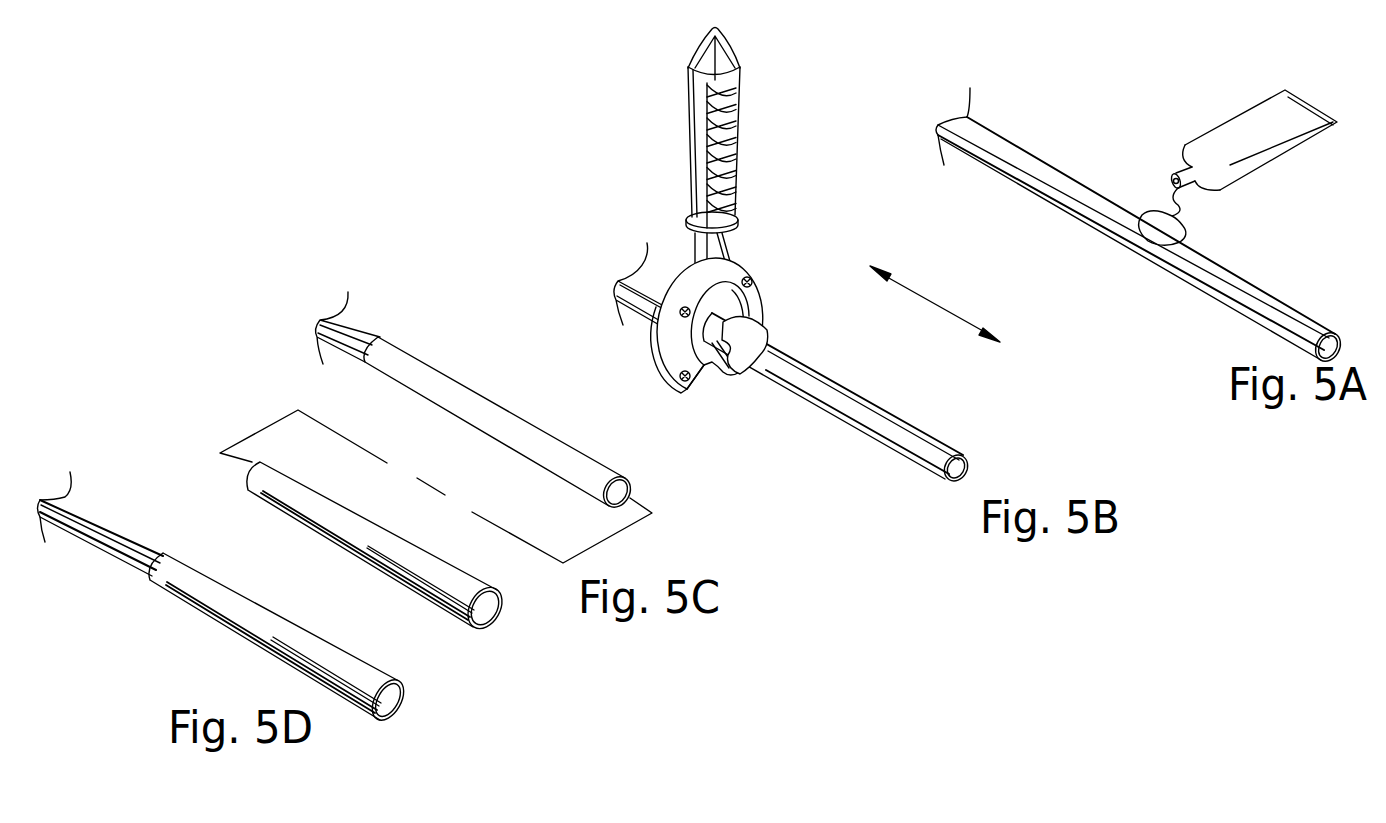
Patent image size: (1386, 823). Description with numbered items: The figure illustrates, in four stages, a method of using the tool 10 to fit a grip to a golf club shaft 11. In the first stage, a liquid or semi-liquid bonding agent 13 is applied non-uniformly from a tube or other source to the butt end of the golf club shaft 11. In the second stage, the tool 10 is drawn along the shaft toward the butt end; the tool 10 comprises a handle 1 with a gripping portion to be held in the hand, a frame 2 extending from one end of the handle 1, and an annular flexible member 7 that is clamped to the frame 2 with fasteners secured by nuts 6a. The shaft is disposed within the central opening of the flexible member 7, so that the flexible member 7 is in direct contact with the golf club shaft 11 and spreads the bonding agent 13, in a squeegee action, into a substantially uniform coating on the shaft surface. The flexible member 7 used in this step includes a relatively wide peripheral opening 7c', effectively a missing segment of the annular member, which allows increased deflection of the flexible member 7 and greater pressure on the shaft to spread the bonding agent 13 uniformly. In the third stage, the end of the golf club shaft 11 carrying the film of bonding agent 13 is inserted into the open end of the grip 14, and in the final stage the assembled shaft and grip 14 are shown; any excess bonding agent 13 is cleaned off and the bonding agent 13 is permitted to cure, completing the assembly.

In FIG. 5B, the handle 1 is at (735, 72).
In FIG. 5B, the frame 2 is at (753, 308).
In FIG. 5B, the nuts 6a is at (749, 278).
In FIG. 5B, the flexible member 7 is at (677, 347).
In FIG. 5B, the peripheral opening 7c' is at (703, 400).
In FIG. 5B, the tool 10 is at (680, 113).
In FIG. 5A, the golf club shaft 11 is at (1233, 280).
In FIG. 5B, the golf club shaft 11 is at (928, 452).
In FIG. 5D, the golf club shaft 11 is at (125, 548).
In FIG. 5A, the bonding agent 13 is at (1170, 237).
In FIG. 5B, the bonding agent 13 is at (757, 335).
In FIG. 5C, the bonding agent 13 is at (500, 408).
In FIG. 5C, the grip 14 is at (453, 600).
In FIG. 5D, the grip 14 is at (338, 673).